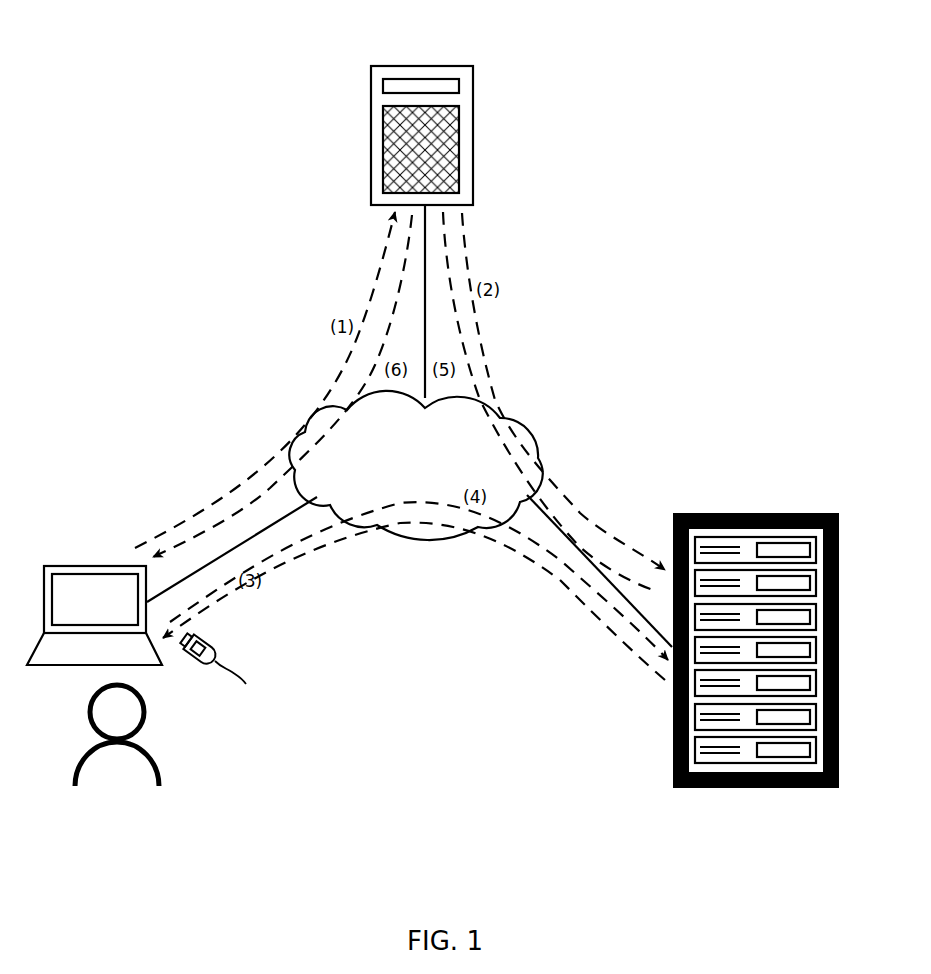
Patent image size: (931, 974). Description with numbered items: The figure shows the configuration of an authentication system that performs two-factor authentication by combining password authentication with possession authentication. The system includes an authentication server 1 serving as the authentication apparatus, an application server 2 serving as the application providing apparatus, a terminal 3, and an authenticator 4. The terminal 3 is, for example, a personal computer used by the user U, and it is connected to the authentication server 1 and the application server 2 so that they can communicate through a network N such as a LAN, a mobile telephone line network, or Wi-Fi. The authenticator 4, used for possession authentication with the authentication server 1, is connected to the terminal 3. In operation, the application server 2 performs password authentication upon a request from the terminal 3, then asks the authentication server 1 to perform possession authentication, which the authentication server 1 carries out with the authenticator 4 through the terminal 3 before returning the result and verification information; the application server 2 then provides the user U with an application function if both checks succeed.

The authentication server 1 is at (810, 512).
The application server 2 is at (445, 66).
The terminal 3 is at (92, 566).
The authenticator 4 is at (218, 671).
The network N is at (405, 537).
The user U is at (160, 773).